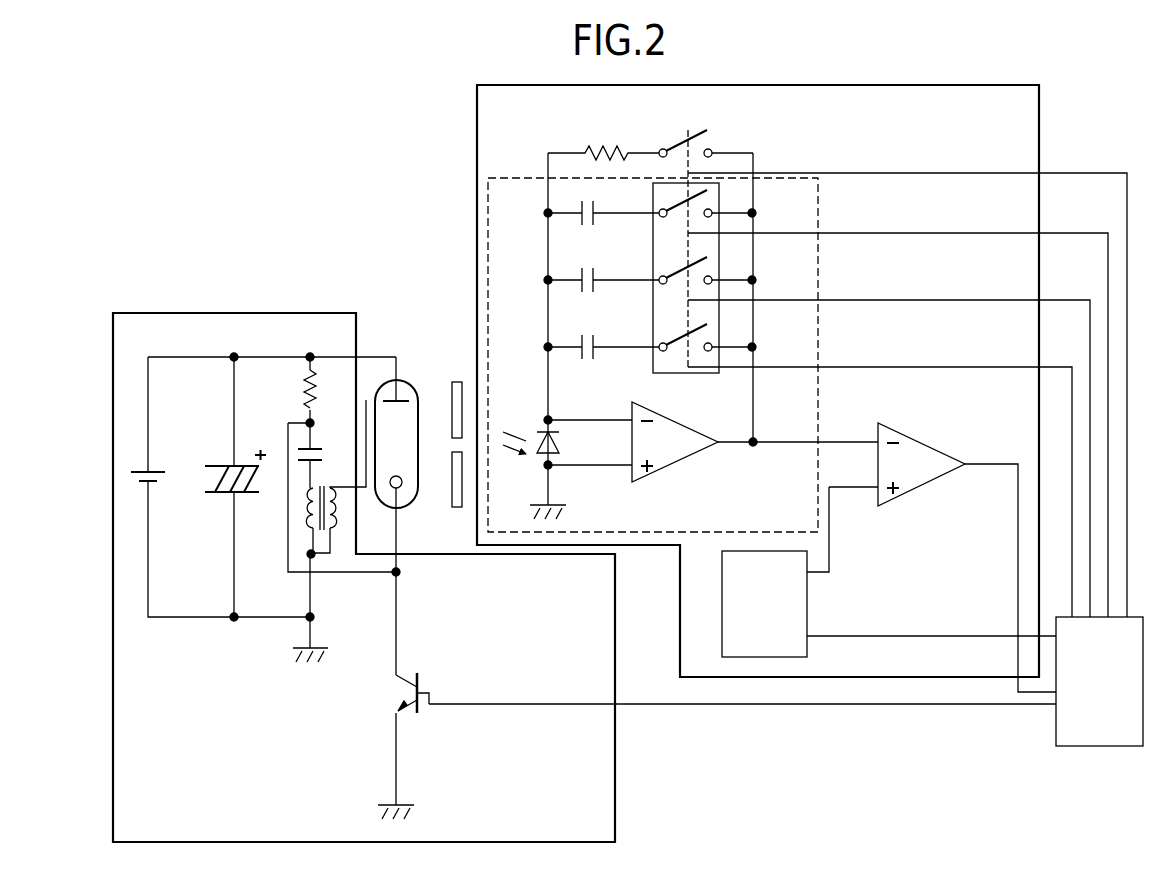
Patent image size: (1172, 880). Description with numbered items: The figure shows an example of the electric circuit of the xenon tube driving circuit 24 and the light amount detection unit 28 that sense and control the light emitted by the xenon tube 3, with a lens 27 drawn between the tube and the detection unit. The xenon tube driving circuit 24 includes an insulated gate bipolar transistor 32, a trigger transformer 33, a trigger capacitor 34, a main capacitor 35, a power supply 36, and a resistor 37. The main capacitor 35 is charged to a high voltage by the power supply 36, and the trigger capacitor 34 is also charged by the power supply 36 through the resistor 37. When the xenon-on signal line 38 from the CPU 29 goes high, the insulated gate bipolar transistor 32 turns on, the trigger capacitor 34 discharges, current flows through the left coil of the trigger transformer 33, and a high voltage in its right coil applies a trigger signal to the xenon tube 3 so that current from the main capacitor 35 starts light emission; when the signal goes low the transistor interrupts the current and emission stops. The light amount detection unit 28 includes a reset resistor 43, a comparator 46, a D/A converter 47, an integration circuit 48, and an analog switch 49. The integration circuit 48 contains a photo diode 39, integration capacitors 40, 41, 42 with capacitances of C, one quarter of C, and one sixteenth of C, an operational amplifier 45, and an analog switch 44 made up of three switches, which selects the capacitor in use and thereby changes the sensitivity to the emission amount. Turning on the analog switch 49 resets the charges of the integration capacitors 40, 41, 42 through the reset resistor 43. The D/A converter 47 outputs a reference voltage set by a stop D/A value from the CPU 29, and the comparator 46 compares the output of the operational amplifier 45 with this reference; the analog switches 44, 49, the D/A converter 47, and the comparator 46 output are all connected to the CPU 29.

The xenon tube 3 is at (404, 381).
The xenon tube driving circuit 24 is at (255, 313).
The lens 27 is at (452, 512).
The light amount detection unit 28 is at (477, 148).
The CPU 29 is at (1098, 749).
The insulated gate bipolar transistor (IGBT) 32 is at (392, 692).
The trigger transformer 33 is at (306, 519).
The trigger capacitor 34 is at (316, 447).
The main capacitor 35 is at (229, 462).
The power supply 36 is at (160, 483).
The resistor 37 is at (300, 390).
The Xe_ON signal line 38 is at (515, 703).
The photo diode 39 is at (534, 427).
The integration capacitor 40 is at (576, 207).
The integration capacitor 41 is at (576, 272).
The integration capacitor 42 is at (576, 338).
The reset resistor 43 is at (610, 147).
The analog switch 44 is at (757, 272).
The operational amplifier 45 is at (684, 418).
The comparator 46 is at (922, 438).
The D/A converter 47 is at (808, 602).
The integration circuit 48 is at (820, 200).
The analog switch 49 is at (714, 133).